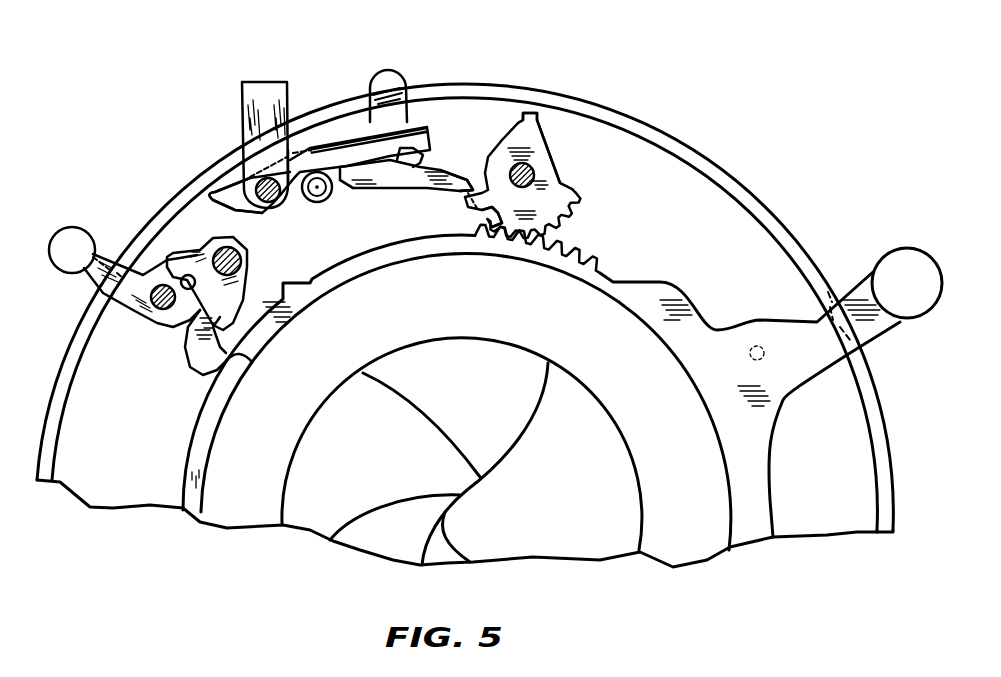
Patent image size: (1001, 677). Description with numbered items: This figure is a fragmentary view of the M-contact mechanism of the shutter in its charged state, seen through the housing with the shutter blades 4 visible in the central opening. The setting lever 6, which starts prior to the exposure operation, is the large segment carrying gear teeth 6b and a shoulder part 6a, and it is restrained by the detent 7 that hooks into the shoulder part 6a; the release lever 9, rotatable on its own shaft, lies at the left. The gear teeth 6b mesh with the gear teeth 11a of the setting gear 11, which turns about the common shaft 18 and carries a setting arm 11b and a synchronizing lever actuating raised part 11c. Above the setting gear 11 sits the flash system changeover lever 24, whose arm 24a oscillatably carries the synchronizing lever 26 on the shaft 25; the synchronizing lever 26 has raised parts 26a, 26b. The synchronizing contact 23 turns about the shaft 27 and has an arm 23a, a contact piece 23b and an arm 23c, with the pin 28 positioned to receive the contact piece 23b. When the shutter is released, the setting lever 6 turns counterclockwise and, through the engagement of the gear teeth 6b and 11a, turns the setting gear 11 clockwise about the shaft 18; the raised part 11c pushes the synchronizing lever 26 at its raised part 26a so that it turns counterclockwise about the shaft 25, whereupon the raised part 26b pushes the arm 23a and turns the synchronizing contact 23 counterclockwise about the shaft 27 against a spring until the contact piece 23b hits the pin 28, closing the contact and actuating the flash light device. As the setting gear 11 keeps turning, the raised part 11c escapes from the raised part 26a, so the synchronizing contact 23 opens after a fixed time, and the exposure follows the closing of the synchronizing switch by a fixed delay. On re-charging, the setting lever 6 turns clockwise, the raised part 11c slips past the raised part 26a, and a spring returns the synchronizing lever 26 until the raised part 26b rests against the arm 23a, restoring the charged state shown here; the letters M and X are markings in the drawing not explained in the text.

The shutter blades 4 is at (566, 484).
The setting lever 6 is at (817, 327).
The shoulder part 6a is at (245, 360).
The gear teeth 6b is at (573, 257).
The detent 7 is at (220, 317).
The release lever 9 is at (106, 235).
The setting gear 11 is at (563, 183).
The gear teeth 11a is at (563, 203).
The setting arm 11b is at (527, 113).
The synchronizing lever actuating raised part 11c is at (482, 215).
The common shaft 18 is at (532, 167).
The synchronizing contact 23 is at (357, 153).
The arm 23a is at (370, 182).
The contact piece 23b is at (420, 125).
The arm 23c is at (213, 200).
The flash system changeover lever 24 is at (253, 107).
The arm 24a is at (290, 162).
The shaft 25 is at (315, 200).
The synchronizing lever 26 is at (360, 190).
The raised part 26a is at (460, 195).
The raised part 26b is at (425, 163).
The shaft 27 is at (262, 203).
The pin 28 is at (410, 118).
The direction of motion M is at (270, 70).
The reference axis X is at (163, 123).